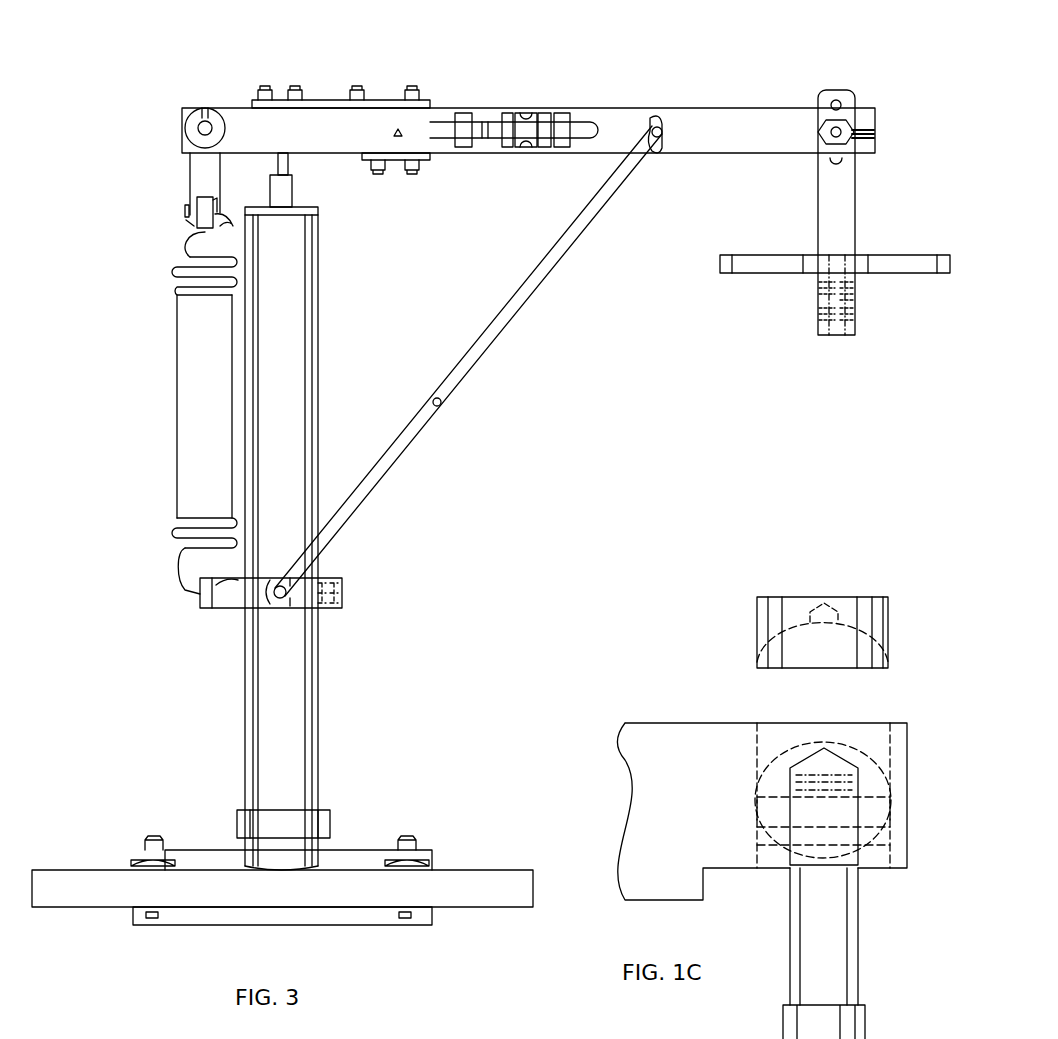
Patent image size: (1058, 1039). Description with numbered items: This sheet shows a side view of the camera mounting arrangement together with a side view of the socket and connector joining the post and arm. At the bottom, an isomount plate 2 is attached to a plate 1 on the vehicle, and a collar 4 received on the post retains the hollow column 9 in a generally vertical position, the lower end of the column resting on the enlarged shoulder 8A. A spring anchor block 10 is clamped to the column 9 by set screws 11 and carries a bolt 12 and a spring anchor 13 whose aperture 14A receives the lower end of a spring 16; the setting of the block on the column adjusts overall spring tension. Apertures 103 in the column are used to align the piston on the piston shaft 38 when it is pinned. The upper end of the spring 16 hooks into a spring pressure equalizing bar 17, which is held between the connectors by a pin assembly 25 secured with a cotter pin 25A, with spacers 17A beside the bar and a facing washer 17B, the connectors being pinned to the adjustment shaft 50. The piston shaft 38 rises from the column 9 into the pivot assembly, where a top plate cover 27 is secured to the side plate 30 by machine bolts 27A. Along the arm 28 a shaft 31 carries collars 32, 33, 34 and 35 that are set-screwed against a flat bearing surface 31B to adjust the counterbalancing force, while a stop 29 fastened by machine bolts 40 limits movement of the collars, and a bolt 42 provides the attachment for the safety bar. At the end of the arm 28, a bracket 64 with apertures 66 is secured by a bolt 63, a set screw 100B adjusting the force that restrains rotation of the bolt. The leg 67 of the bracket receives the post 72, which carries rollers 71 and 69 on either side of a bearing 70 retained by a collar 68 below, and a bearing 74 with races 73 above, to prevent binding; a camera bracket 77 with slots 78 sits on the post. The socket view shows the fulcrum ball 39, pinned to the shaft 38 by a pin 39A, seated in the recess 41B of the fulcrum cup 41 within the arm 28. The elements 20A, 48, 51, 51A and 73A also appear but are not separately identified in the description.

In FIG. 3, the plate 1 is at (534, 888).
In FIG. 3, the isomount plate 2 is at (428, 856).
In FIG. 3, the collar 4 is at (328, 812).
In FIG. 3, the enlarged shoulder 8A is at (243, 860).
In FIG. 3, the column 9 is at (290, 408).
In FIG. 3, the spring anchor block 10 is at (340, 588).
In FIG. 3, the set screws 11 is at (322, 606).
In FIG. 3, the bolt 12 is at (286, 590).
In FIG. 3, the spring anchor 13 is at (205, 608).
In FIG. 3, the aperture 14A is at (198, 592).
In FIG. 3, the spring 16 is at (177, 396).
In FIG. 3, the spring pressure equalizing bar 17 is at (215, 228).
In FIG. 3, the spacers 17A is at (214, 204).
In FIG. 3, the facing washer 17B is at (193, 222).
In FIG. 3, the pointer 20A is at (398, 140).
In FIG. 3, the pin assembly 25 is at (195, 212).
In FIG. 3, the cotter pin 25A is at (186, 208).
In FIG. 3, the top plate cover 27 is at (312, 100).
In FIG. 3, the machine bolts 27A is at (360, 100).
In FIG. 3, the stop 29 is at (530, 110).
In FIG. 3, the side plate 30 is at (392, 145).
In FIG. 3, the shaft 31 is at (578, 120).
In FIG. 3, the flat bearing surface 31B is at (485, 140).
In FIG. 3, the collar 32 is at (562, 148).
In FIG. 3, the collar 33 is at (508, 112).
In FIG. 3, the collar 34 is at (470, 110).
In FIG. 3, the collar 35 is at (546, 112).
In FIG. 3, the piston shaft 38 is at (293, 186).
In FIG. 1C, the piston shaft 38 is at (783, 1020).
In FIG. 3, the machine bolts 40 is at (526, 150).
In FIG. 3, the bolt 42 is at (663, 140).
In FIG. 3, the brace 48 is at (660, 120).
In FIG. 3, the adjustment shaft 50 is at (203, 126).
In FIG. 3, the pulley pin 51 is at (213, 118).
In FIG. 3, the pin slot 51A is at (207, 112).
In FIG. 3, the bolt 63 is at (832, 136).
In FIG. 3, the bracket 64 is at (846, 90).
In FIG. 3, the apertures 66 is at (840, 104).
In FIG. 3, the leg 67 is at (854, 312).
In FIG. 3, the collar 68 is at (818, 332).
In FIG. 3, the roller 69 is at (818, 322).
In FIG. 3, the bearing 70 is at (818, 316).
In FIG. 3, the roller 71 is at (818, 306).
In FIG. 3, the post 72 is at (838, 336).
In FIG. 3, the races 73 is at (854, 296).
In FIG. 3, the thread section 73A is at (854, 283).
In FIG. 3, the bearing 74 is at (854, 288).
In FIG. 3, the camera bracket 77 is at (720, 263).
In FIG. 3, the slots 78 is at (752, 270).
In FIG. 3, the set screw 100B is at (876, 134).
In FIG. 3, the apertures 103 is at (442, 403).
In FIG. 1C, the arm 28 is at (640, 722).
In FIG. 1C, the fulcrum ball 39 is at (856, 758).
In FIG. 1C, the pin 39A is at (760, 826).
In FIG. 1C, the fulcrum cup 41 is at (757, 612).
In FIG. 1C, the recess 41B is at (792, 660).